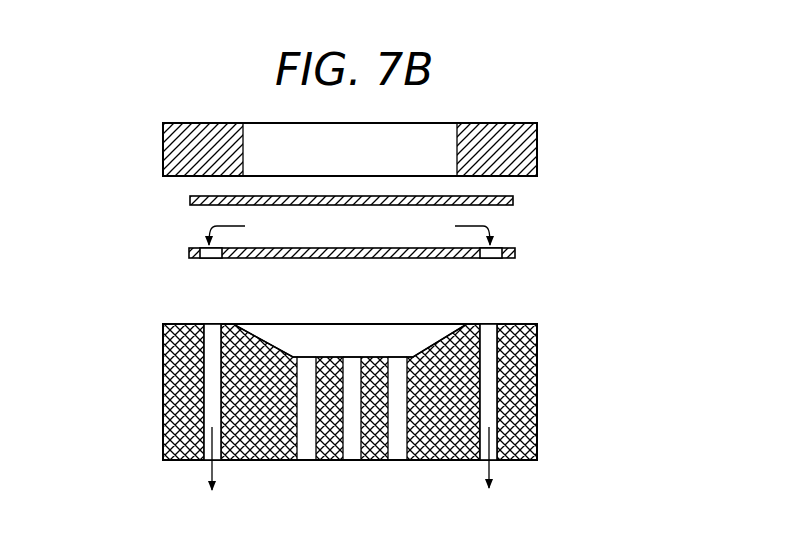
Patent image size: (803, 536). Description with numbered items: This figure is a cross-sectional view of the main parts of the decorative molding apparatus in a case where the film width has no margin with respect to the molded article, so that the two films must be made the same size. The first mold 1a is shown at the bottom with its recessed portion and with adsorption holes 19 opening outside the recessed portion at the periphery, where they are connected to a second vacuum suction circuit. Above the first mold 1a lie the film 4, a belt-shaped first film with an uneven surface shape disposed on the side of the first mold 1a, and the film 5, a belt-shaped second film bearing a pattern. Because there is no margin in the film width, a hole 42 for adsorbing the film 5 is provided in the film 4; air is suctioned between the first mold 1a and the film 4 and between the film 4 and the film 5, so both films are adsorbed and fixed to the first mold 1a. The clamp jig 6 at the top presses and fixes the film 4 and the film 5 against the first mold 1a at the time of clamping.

The clamp jig 6 is at (527, 153).
The film 5 is at (516, 201).
The film 4 is at (384, 271).
The hole 42 is at (212, 258).
The adsorption holes 19 is at (213, 392).
The first mold 1a is at (339, 407).